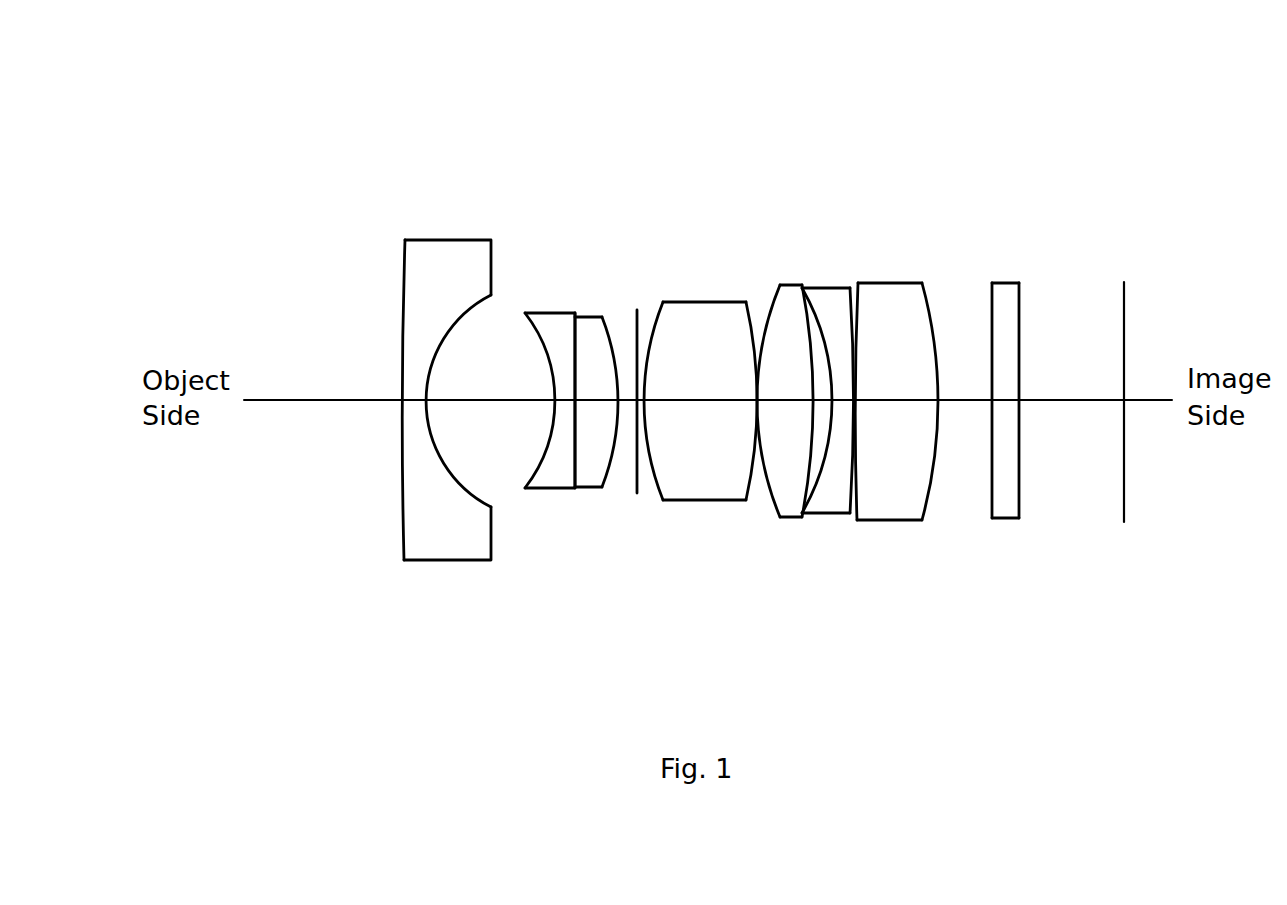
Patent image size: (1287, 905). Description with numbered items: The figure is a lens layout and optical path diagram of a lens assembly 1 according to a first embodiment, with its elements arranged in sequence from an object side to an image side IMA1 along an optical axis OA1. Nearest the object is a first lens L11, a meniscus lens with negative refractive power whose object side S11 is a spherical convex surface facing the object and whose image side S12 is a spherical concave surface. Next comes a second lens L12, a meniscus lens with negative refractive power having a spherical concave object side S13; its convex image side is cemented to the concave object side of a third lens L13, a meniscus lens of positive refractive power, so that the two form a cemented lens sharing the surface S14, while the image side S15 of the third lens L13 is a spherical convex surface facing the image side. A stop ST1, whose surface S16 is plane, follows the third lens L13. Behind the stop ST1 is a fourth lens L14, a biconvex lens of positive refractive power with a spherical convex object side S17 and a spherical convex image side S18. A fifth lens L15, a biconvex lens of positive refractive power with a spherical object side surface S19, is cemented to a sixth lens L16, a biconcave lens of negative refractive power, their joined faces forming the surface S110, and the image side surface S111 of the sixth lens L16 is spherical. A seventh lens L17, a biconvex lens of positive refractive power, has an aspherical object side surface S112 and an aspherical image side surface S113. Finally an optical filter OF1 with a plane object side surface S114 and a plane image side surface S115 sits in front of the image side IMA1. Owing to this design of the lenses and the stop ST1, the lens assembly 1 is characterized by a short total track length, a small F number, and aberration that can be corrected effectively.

The lens assembly 1 is at (142, 70).
The optical axis OA1 is at (287, 400).
The first lens L11 is at (379, 405).
The second lens L12 is at (528, 387).
The third lens L13 is at (603, 355).
The stop ST1 is at (664, 368).
The fourth lens L14 is at (706, 382).
The fifth lens L15 is at (801, 385).
The sixth lens L16 is at (853, 372).
The seventh lens L17 is at (920, 356).
The optical filter OF1 is at (1024, 400).
The image side IMA1 is at (1124, 282).
The object side surface of the first lens S11 is at (402, 482).
The image side surface of the first lens S12 is at (463, 485).
The object side surface of the second lens S13 is at (540, 487).
The cemented surface S14 is at (575, 483).
The image side surface of the third lens S15 is at (620, 480).
The stop surface S16 is at (637, 493).
The object side surface of the fourth lens S17 is at (692, 500).
The image side surface of the fourth lens S18 is at (723, 500).
The object side surface of the fifth lens S19 is at (768, 490).
The cemented surface S110 is at (803, 515).
The image side surface of the sixth lens S111 is at (840, 513).
The object side surface of the seventh lens S112 is at (877, 520).
The image side surface of the seventh lens S113 is at (937, 500).
The object side surface of the optical filter S114 is at (992, 497).
The image side surface of the optical filter S115 is at (1018, 500).